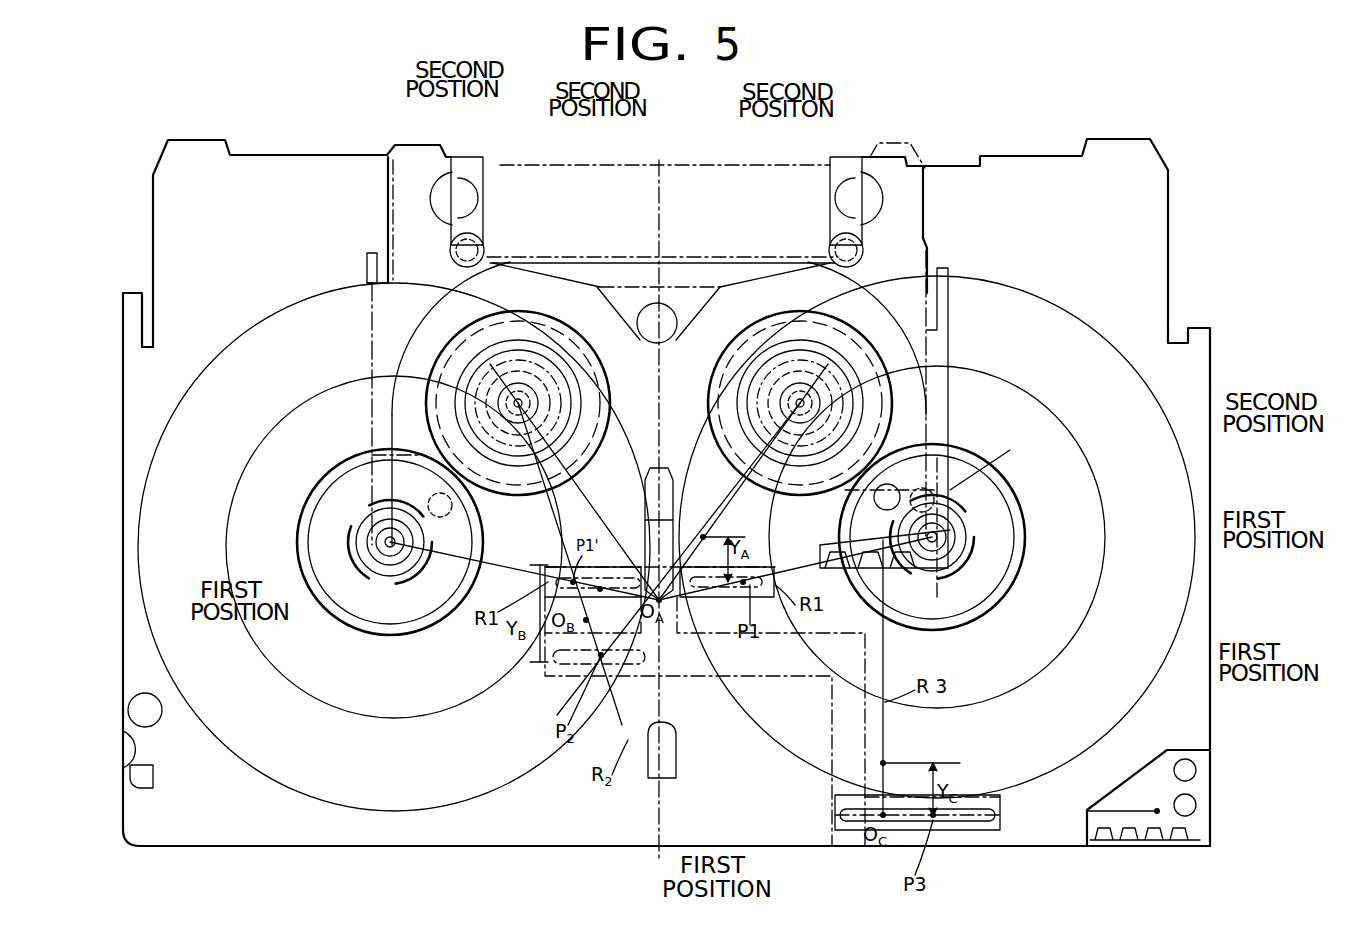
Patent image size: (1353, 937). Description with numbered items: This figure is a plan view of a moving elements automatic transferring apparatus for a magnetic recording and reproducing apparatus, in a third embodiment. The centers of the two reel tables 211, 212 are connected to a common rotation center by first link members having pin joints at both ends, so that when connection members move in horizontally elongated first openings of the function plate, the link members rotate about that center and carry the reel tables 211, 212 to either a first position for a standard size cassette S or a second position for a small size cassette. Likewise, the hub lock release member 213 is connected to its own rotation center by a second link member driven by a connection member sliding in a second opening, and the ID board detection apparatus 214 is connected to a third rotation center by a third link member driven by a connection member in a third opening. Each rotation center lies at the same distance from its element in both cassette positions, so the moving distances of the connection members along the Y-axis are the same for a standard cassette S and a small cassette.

The reel table 211 is at (297, 542).
The reel table 212 is at (1027, 530).
The hub lock release member 213 is at (644, 478).
The ID board detection apparatus 214 is at (950, 490).
The standard size cassette S is at (297, 157).